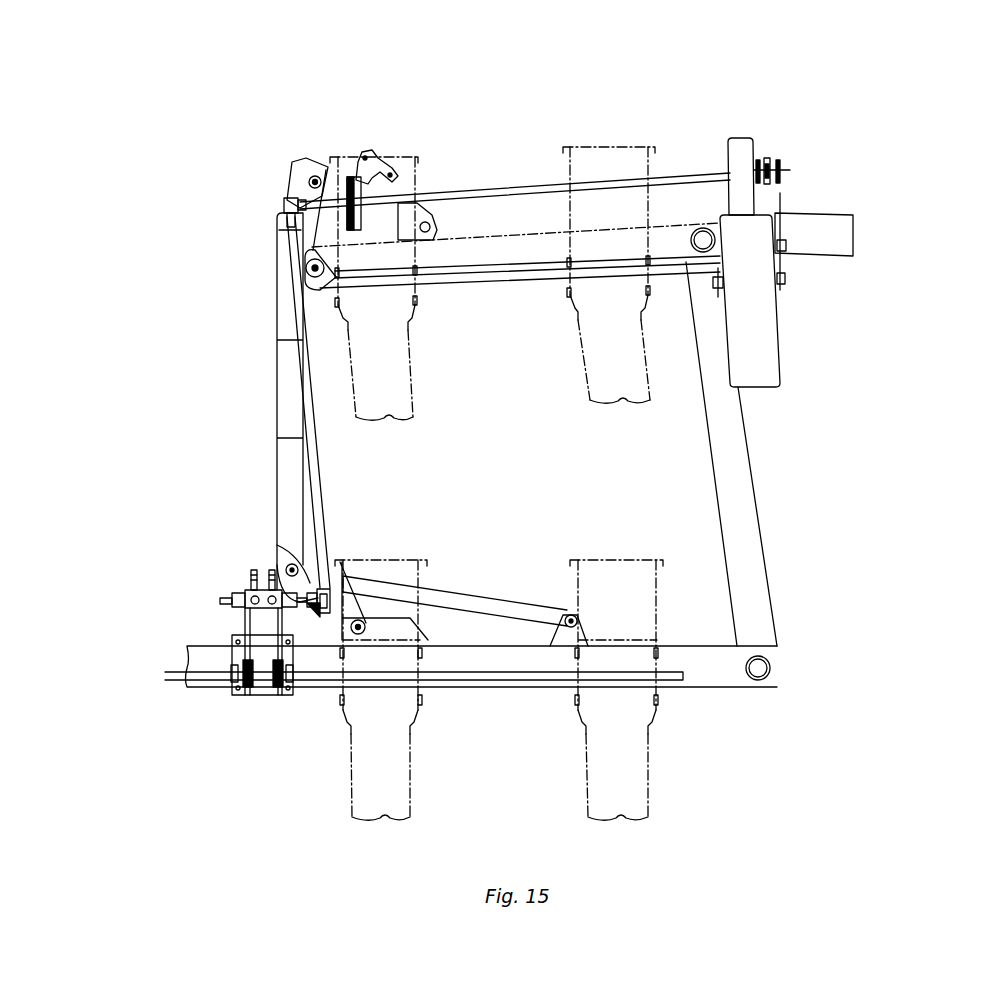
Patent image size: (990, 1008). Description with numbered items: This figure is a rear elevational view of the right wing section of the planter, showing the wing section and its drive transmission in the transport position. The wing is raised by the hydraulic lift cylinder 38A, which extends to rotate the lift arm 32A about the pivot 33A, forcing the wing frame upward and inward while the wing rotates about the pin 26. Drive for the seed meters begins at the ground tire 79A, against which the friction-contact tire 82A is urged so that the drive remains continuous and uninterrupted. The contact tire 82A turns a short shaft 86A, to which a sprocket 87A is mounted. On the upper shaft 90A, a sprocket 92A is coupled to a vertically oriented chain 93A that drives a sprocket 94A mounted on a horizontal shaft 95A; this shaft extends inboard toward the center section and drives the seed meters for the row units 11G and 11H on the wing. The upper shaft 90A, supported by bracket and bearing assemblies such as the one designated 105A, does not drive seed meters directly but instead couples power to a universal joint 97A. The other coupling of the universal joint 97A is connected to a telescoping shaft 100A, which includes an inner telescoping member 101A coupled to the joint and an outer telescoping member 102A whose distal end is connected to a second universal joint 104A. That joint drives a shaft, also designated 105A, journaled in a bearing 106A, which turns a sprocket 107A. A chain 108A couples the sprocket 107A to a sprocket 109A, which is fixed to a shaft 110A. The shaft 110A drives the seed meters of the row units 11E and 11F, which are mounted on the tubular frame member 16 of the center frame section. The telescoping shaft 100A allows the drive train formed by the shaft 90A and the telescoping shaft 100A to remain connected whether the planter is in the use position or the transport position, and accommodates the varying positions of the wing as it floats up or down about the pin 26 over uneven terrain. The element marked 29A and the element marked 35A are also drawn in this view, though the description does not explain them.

The row unit 11E is at (390, 818).
The row unit 11F is at (635, 818).
The row unit 11G is at (398, 418).
The row unit 11H is at (630, 401).
The tubular frame member 16 is at (725, 686).
The pivot 26 is at (772, 668).
The pivot ring 29A is at (702, 240).
The lift arm 32A is at (277, 465).
The pivot 33A is at (362, 623).
The mounting plate 35A is at (316, 176).
The hydraulic lift cylinder 38A is at (520, 593).
The ground tire 79A is at (757, 386).
The friction-contact tire 82A is at (741, 139).
The short shaft 86A is at (759, 160).
The sprocket 87A is at (768, 160).
The upper shaft 90A is at (475, 190).
The sprocket 92A is at (779, 165).
The chain 93A is at (778, 215).
The sprocket 94A is at (786, 256).
The horizontal shaft 95A is at (481, 276).
The universal joint 97A is at (284, 206).
The telescoping shaft 100A is at (277, 298).
The inner telescoping member 101A is at (287, 225).
The outer telescoping member 102A is at (305, 392).
The second universal joint 104A is at (308, 583).
The bracket and bearing assembly 105A is at (381, 158).
The bearing 106A is at (277, 619).
The sprocket 107A is at (255, 590).
The chain 108A is at (270, 656).
The sprocket 109A is at (276, 653).
The shaft 110A is at (520, 686).